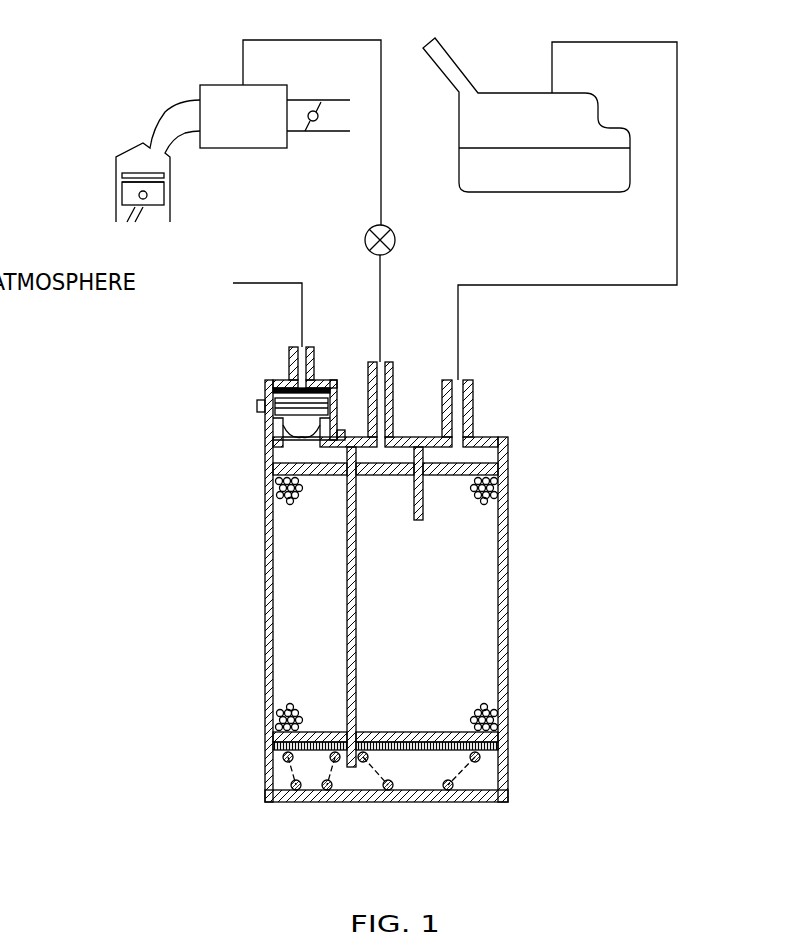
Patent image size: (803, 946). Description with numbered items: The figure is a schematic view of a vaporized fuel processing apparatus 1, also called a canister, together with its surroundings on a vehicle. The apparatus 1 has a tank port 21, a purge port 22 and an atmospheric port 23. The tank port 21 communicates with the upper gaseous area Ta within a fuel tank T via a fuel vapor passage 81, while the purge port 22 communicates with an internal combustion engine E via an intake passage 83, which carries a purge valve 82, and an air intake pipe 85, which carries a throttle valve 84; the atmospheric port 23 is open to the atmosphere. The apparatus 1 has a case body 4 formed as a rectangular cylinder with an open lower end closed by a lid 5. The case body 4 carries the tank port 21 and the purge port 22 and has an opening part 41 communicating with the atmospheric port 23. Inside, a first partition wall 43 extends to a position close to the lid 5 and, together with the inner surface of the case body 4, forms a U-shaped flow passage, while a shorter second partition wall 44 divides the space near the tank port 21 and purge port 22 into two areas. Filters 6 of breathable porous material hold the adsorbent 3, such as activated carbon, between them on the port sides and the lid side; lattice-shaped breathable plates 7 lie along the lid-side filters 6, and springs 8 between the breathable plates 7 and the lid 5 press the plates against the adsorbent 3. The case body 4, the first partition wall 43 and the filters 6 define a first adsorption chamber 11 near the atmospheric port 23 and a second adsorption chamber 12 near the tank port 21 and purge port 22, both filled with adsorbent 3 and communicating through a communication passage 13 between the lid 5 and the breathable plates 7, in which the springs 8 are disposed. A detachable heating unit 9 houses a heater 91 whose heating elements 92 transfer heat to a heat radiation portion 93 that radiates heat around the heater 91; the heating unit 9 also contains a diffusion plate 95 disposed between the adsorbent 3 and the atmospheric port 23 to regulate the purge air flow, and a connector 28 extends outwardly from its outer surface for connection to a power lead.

The vaporized fuel processing apparatus 1 is at (541, 546).
The adsorbent 3 is at (272, 723).
The case body 4 is at (507, 487).
The lid 5 is at (413, 802).
The filters 6 is at (283, 468).
The breathable plates 7 is at (308, 750).
The springs 8 is at (296, 802).
The heating unit 9 is at (265, 383).
The first adsorption chamber 11 is at (307, 585).
The second adsorption chamber 12 is at (460, 583).
The communication passage 13 is at (354, 777).
The tank port 21 is at (457, 397).
The purge port 22 is at (380, 378).
The atmospheric port 23 is at (289, 358).
The connector 28 is at (257, 405).
The opening part 41 is at (273, 443).
The first partition wall 43 is at (352, 624).
The second partition wall 44 is at (423, 493).
The fuel vapor passage 81 is at (550, 287).
The purge valve 82 is at (395, 240).
The intake passage 83 is at (243, 53).
The throttle valve 84 is at (313, 131).
The air intake pipe 85 is at (240, 148).
The heater 91 is at (341, 432).
The heating elements 92 is at (313, 405).
The heat radiation portion 93 is at (283, 415).
The diffusion plate 95 is at (273, 392).
The internal combustion engine E is at (124, 143).
The fuel tank T is at (493, 92).
The upper gaseous area Ta is at (535, 120).